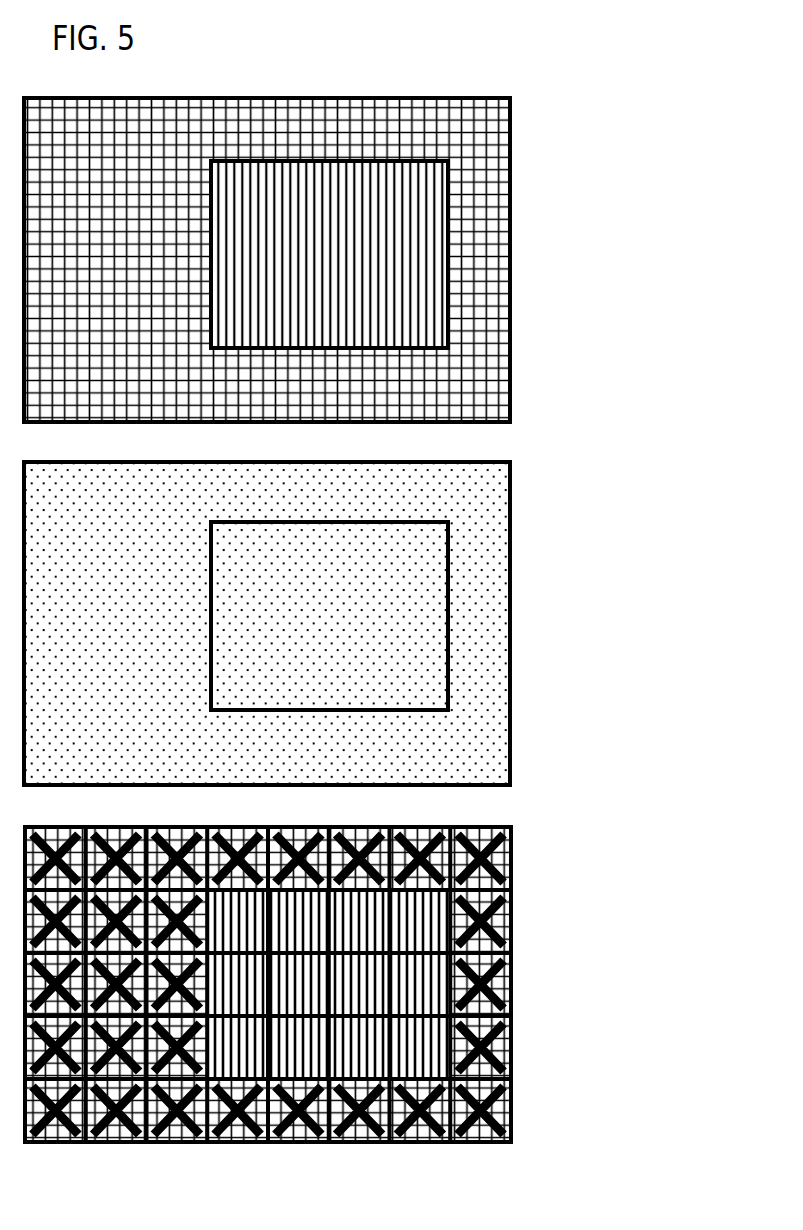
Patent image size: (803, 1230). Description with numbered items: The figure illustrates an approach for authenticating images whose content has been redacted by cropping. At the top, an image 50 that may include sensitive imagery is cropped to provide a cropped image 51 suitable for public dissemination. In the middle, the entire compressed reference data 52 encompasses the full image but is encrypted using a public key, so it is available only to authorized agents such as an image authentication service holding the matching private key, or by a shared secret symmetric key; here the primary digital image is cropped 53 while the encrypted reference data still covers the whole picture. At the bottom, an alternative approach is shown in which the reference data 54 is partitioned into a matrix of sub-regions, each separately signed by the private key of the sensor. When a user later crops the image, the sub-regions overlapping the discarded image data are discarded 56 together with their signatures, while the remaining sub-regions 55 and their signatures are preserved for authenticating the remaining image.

The image 50 is at (717, 434).
The cropped image 51 is at (655, 356).
The compressed reference data 52 is at (715, 785).
The cropped primary digital image 53 is at (653, 703).
The reference data 54 is at (364, 1012).
The remaining sub-regions 55 is at (649, 1130).
The discarded sub-regions 56 is at (690, 1023).